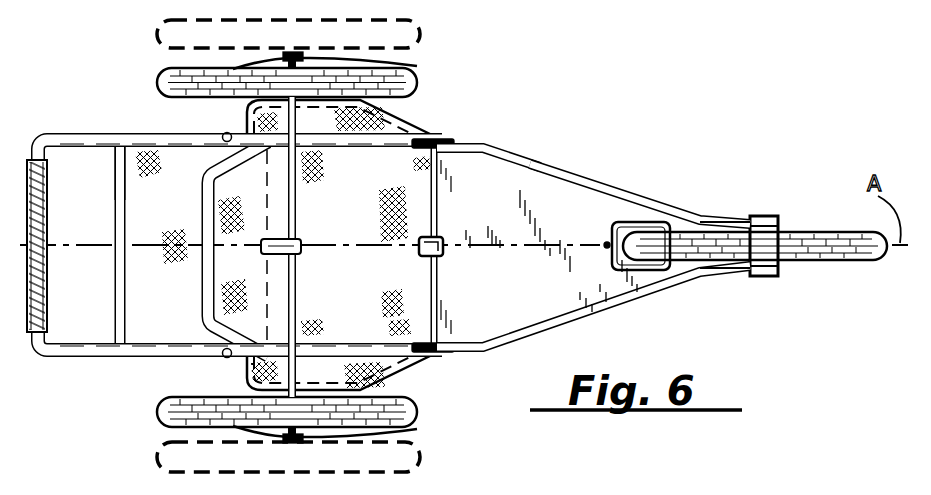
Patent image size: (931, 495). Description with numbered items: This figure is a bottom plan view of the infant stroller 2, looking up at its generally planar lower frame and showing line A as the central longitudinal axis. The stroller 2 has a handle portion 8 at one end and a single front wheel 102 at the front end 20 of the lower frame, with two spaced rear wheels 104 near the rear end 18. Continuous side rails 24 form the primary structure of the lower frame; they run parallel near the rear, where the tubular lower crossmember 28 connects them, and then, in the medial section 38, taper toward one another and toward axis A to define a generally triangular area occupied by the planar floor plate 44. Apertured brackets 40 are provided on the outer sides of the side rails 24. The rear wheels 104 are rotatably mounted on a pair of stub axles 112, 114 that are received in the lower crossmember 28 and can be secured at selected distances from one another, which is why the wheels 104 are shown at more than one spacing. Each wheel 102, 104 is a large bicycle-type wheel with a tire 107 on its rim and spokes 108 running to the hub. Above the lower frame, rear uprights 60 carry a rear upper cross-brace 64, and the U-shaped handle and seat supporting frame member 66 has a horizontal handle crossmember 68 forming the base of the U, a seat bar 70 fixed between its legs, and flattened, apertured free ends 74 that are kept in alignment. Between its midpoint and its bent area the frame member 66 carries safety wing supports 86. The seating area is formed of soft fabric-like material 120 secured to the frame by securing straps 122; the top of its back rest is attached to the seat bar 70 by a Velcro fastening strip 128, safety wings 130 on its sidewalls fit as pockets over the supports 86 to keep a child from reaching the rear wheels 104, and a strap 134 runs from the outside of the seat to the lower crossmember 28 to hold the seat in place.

The infant stroller 2 is at (713, 315).
The handle portion 8 is at (52, 362).
The rear end 18 is at (255, 381).
The front end 20 is at (703, 211).
The side rails 24 is at (478, 146).
The lower crossmember 28 is at (296, 200).
The medial section 38 is at (560, 170).
The brackets 40 is at (450, 353).
The floor plate 44 is at (573, 283).
The rear uprights 60 is at (232, 362).
The rear upper cross-brace 64 is at (205, 222).
The handle and seat supporting frame member 66 is at (64, 133).
The handle crossmember 68 is at (47, 333).
The seat bar 70 is at (117, 150).
The free ends 74 is at (437, 153).
The safety wing supports 86 is at (400, 119).
The front wheel 102 is at (856, 266).
The rear wheels 104 is at (422, 37).
The tires 107 is at (163, 70).
The spokes 108 is at (333, 62).
The stub axle 112 is at (340, 357).
The stub axle 114 is at (293, 118).
The fabric-like material 120 is at (420, 304).
The securing straps 122 is at (440, 238).
The Velcro fastening strip 128 is at (117, 262).
The safety wings 130 is at (420, 368).
The strap 134 is at (300, 253).